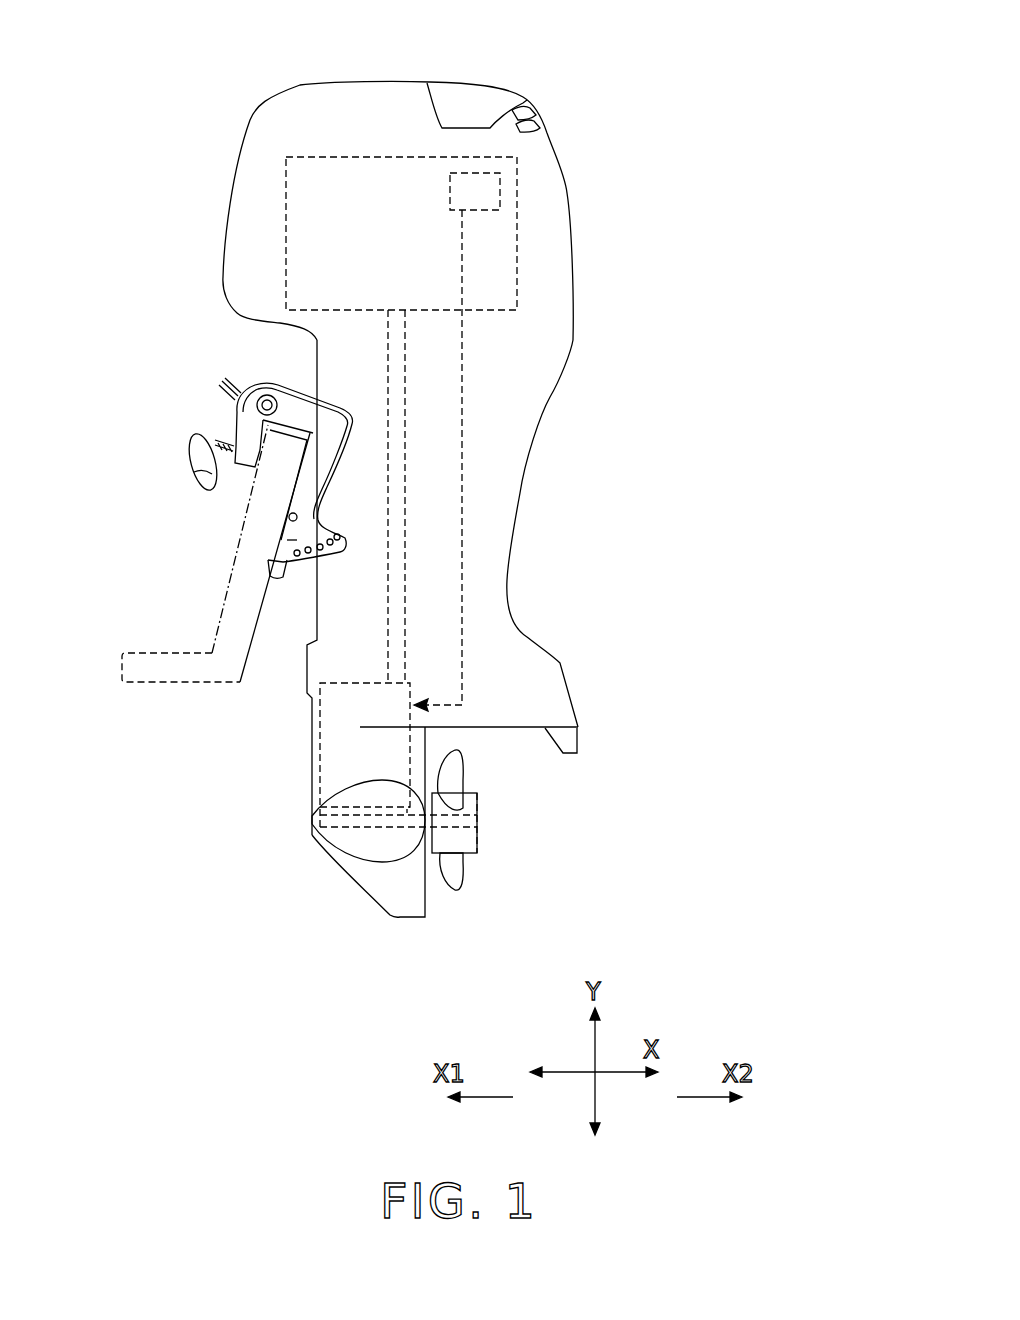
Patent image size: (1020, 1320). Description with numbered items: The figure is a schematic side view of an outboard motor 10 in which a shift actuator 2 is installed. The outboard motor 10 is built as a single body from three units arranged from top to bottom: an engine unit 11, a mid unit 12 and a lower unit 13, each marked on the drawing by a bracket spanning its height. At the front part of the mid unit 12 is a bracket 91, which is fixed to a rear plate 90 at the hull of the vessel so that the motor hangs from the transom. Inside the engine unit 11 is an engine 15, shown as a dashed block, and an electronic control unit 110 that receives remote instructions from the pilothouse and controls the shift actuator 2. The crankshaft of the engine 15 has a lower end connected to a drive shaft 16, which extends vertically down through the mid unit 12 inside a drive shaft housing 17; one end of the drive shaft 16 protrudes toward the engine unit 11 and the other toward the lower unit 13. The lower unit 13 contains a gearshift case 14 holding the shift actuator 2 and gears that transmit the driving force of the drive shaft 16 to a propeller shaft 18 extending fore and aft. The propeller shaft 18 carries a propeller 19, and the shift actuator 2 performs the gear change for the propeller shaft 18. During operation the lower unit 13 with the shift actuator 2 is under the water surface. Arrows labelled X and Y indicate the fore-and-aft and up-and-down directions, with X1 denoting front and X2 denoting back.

The outboard motor 10 is at (172, 70).
The engine unit 11 is at (690, 90).
The mid unit 12 is at (690, 354).
The lower unit 13 is at (690, 659).
The engine 15 is at (323, 155).
The electronic control unit (ECU) 110 is at (500, 195).
The drive shaft housing 17 is at (520, 493).
The drive shaft 16 is at (387, 627).
The bracket 91 is at (233, 413).
The rear plate 90 is at (165, 683).
The shift actuator 2 is at (310, 707).
The gearshift case 14 is at (310, 787).
The propeller shaft 18 is at (347, 830).
The propeller 19 is at (463, 870).